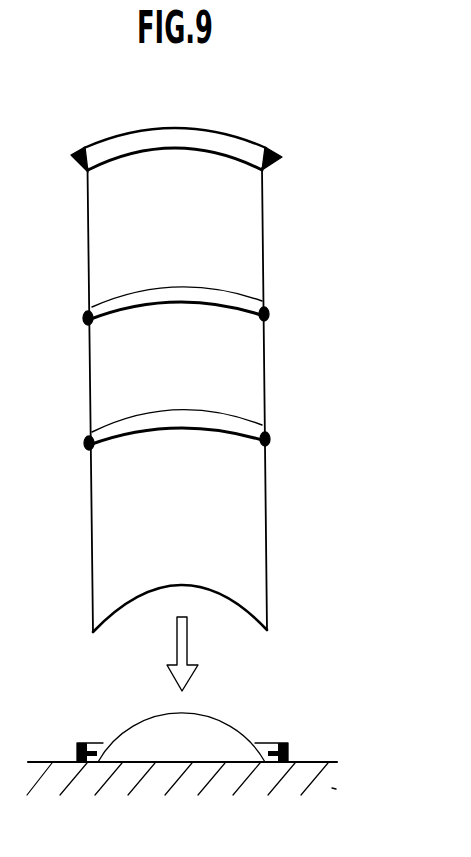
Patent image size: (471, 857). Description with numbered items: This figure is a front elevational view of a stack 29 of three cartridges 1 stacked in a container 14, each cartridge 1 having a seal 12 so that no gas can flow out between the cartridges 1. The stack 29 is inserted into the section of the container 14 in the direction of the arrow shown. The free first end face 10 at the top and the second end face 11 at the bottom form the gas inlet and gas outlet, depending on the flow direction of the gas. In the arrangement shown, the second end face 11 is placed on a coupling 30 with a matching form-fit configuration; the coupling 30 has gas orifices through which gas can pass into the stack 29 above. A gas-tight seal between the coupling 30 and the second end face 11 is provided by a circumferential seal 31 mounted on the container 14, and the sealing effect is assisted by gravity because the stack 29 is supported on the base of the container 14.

The cartridge 1 is at (80, 261).
The first end face 10 is at (210, 361).
The second end face 11 is at (160, 588).
The seal 12 is at (245, 150).
The container 14 is at (306, 792).
The stack 29 is at (335, 222).
The coupling 30 is at (131, 728).
The circumferential seal 31 is at (290, 745).